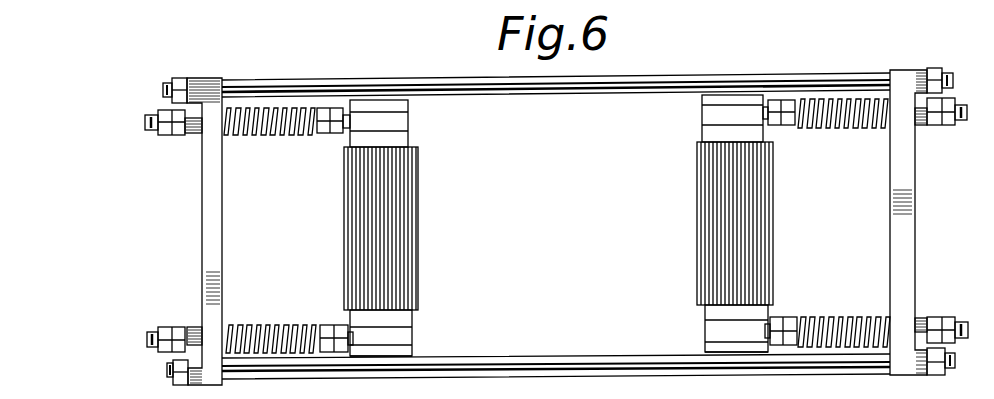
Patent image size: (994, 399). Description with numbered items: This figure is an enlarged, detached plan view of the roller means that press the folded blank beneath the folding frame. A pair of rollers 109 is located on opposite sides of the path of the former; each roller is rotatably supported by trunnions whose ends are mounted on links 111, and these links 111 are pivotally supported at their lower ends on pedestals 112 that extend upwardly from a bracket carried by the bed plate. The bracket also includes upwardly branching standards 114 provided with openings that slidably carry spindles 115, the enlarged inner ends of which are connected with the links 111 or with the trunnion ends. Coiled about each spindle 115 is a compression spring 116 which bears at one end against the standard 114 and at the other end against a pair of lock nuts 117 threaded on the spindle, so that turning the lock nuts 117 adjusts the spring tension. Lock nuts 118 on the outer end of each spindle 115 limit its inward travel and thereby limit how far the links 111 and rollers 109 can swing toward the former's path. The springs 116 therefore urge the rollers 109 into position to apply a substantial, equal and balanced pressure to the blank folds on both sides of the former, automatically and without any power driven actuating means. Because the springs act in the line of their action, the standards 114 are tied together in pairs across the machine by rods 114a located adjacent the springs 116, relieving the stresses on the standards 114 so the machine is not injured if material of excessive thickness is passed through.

The rollers 109 is at (420, 183).
The links 111 is at (408, 138).
The pedestals 112 is at (385, 352).
The standards 114 is at (225, 220).
The rods 114a is at (653, 78).
The spindles 115 is at (147, 128).
The compression spring 116 is at (300, 137).
The lock nuts 117 is at (337, 110).
The lock nuts 118 is at (182, 135).